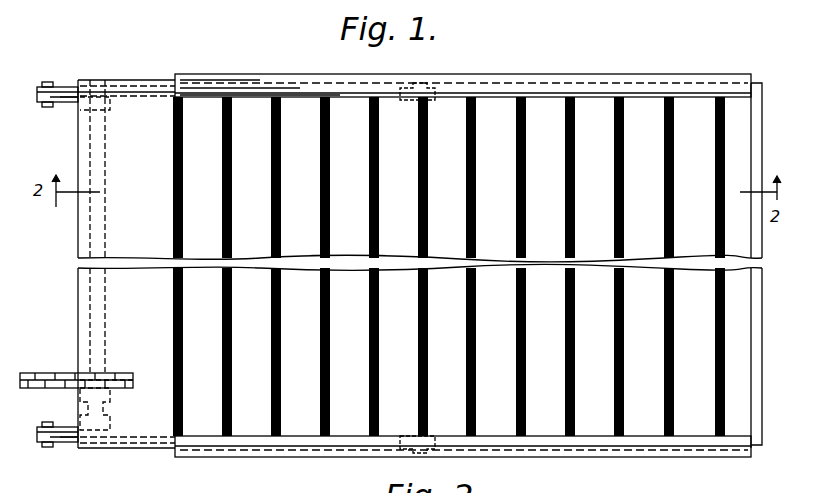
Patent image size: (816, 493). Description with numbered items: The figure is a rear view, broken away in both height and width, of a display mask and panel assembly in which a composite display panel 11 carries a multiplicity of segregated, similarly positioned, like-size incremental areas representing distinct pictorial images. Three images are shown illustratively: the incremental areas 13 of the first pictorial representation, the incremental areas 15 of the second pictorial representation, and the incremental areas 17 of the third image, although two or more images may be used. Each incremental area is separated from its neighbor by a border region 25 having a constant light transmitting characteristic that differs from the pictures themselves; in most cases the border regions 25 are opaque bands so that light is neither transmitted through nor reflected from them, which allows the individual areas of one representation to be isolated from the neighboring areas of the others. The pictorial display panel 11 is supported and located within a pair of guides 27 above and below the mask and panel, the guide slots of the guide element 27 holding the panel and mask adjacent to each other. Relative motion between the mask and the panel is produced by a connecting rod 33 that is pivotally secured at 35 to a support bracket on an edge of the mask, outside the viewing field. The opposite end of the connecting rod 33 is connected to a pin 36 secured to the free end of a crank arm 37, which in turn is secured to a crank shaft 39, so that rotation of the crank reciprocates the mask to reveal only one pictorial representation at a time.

The composite display panel 11 is at (78, 302).
The incremental areas of the first pictorial representation 13 is at (205, 108).
The incremental areas of the second pictorial representation 15 is at (248, 112).
The incremental areas of the third image 17 is at (292, 115).
The border region 25 is at (175, 172).
The guide 27 is at (197, 74).
The connecting rod 33 is at (66, 87).
The pivot 35 is at (422, 84).
The pin 36 is at (47, 82).
The crank arm 37 is at (70, 103).
The crank shaft 39 is at (95, 324).